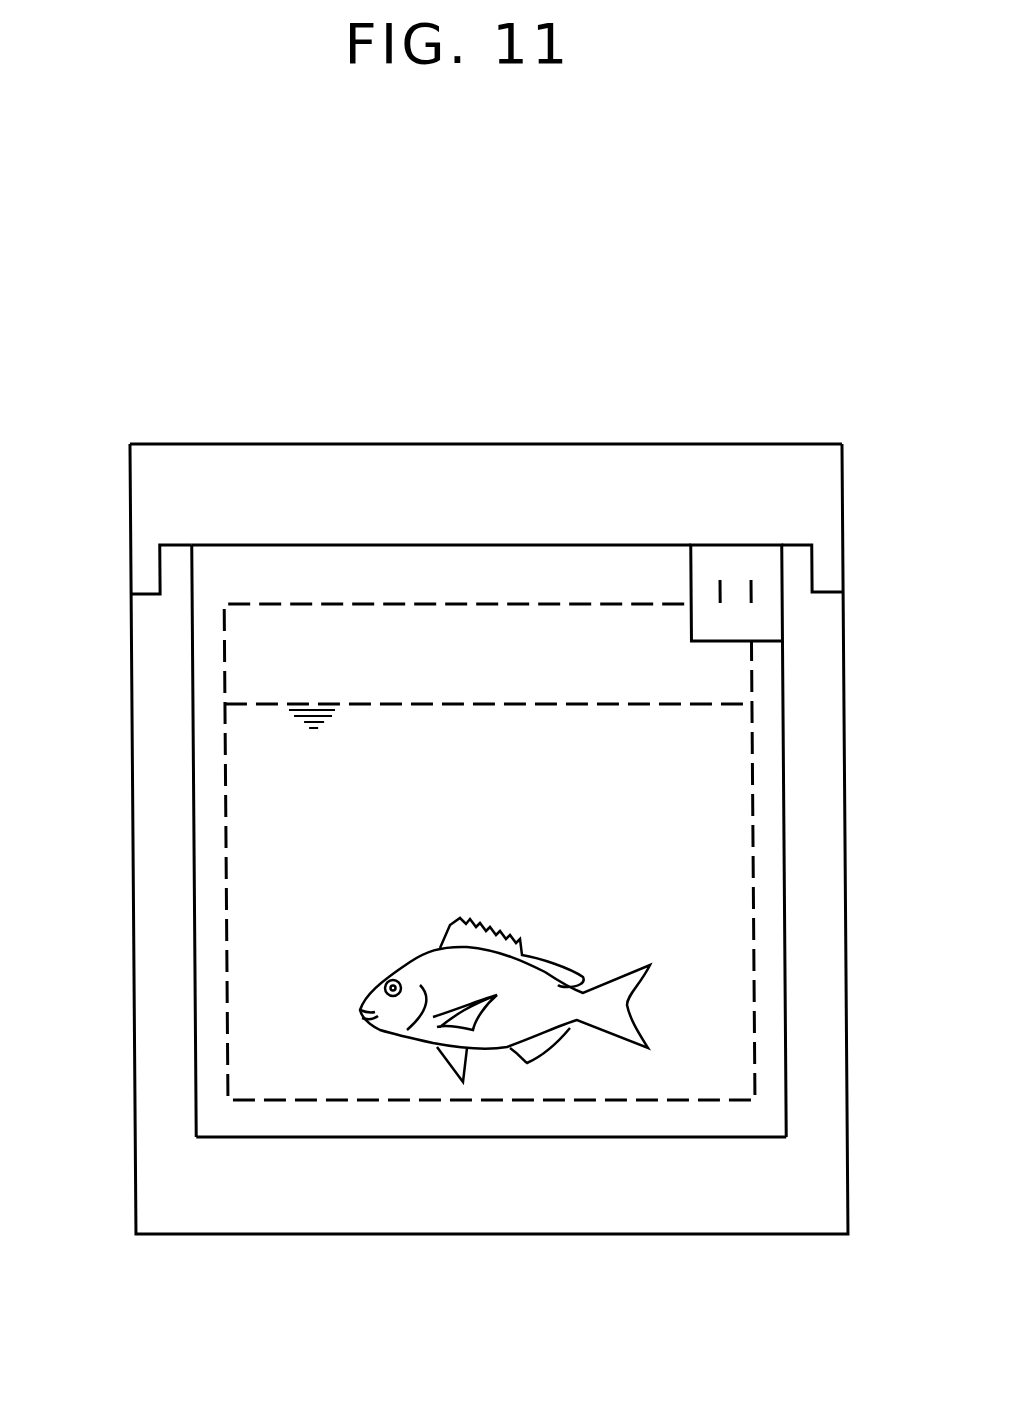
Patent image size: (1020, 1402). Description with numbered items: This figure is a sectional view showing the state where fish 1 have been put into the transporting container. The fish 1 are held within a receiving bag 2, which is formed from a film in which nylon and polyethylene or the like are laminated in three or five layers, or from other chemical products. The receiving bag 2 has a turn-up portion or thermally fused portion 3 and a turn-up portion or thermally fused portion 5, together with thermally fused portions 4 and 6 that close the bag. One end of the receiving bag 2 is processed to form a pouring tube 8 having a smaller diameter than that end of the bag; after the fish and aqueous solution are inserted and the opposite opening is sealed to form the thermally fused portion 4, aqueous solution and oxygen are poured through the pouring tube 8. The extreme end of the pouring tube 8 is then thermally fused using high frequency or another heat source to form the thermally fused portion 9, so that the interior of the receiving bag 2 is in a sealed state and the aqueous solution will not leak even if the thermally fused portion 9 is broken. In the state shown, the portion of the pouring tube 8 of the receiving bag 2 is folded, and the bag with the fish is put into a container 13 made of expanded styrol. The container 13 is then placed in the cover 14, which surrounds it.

The fish 1 is at (547, 947).
The receiving bag 2 is at (785, 785).
The turn-up portion or thermally fused portion 3 is at (773, 885).
The thermally fused portion 4 is at (499, 1122).
The turn-up portion or thermally fused portion 5 is at (205, 842).
The thermally fused portion 6 is at (392, 572).
The pouring tube 8 is at (751, 557).
The thermally fused portion 9 is at (718, 625).
The container 13 is at (850, 1055).
The cover 14 is at (545, 443).